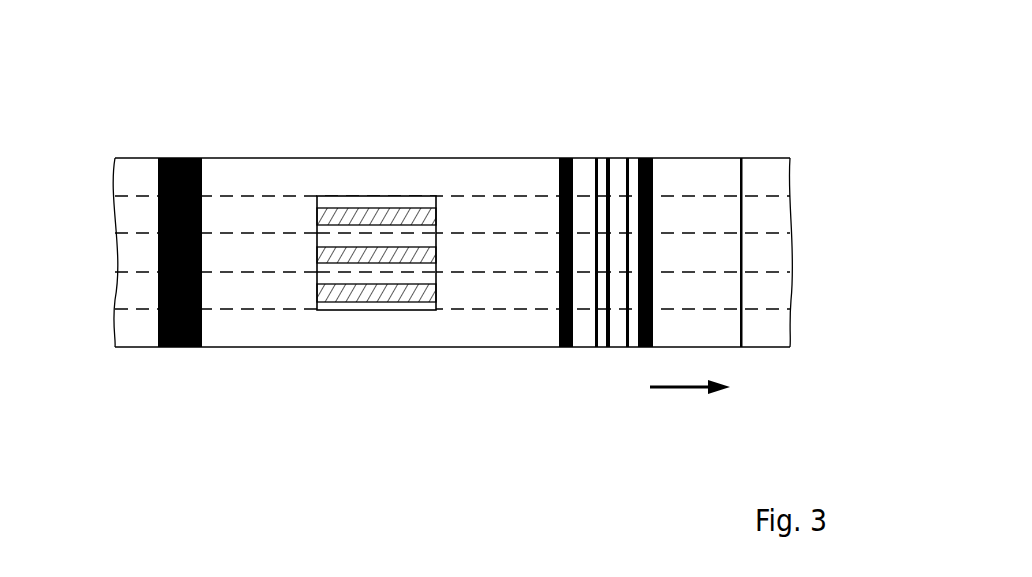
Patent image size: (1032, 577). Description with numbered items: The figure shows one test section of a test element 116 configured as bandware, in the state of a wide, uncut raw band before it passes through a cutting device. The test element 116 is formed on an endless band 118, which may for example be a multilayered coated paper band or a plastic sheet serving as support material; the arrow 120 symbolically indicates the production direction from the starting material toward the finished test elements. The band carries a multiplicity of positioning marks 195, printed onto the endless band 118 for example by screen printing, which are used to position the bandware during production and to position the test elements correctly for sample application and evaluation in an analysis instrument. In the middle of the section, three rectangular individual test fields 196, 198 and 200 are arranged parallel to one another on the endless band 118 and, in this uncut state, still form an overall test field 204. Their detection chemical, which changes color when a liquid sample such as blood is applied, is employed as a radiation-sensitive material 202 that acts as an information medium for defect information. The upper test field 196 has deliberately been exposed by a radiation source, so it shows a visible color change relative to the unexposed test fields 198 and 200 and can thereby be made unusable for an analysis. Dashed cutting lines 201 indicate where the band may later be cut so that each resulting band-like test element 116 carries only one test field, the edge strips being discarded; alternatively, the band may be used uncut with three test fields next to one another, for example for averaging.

The test element 116 is at (452, 292).
The endless band 118 is at (452, 378).
The arrow 120 is at (675, 389).
The positioning marks 195 is at (181, 158).
The upper test field 196 is at (317, 214).
The test field 198 is at (317, 256).
The test field 200 is at (317, 297).
The cutting lines 201 is at (758, 196).
The radiation-sensitive material 202 is at (282, 264).
The overall test field 204 is at (286, 264).